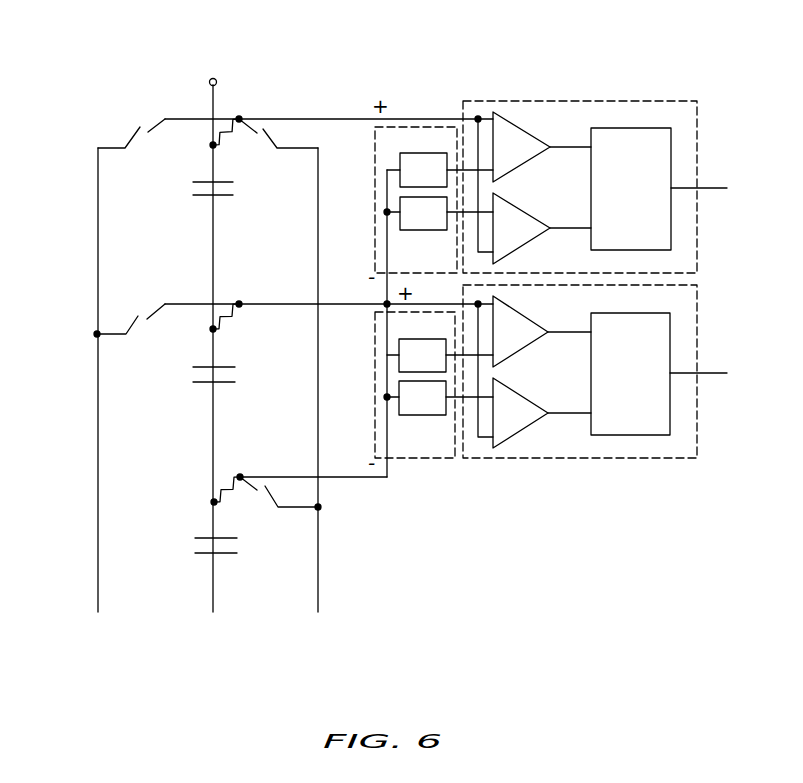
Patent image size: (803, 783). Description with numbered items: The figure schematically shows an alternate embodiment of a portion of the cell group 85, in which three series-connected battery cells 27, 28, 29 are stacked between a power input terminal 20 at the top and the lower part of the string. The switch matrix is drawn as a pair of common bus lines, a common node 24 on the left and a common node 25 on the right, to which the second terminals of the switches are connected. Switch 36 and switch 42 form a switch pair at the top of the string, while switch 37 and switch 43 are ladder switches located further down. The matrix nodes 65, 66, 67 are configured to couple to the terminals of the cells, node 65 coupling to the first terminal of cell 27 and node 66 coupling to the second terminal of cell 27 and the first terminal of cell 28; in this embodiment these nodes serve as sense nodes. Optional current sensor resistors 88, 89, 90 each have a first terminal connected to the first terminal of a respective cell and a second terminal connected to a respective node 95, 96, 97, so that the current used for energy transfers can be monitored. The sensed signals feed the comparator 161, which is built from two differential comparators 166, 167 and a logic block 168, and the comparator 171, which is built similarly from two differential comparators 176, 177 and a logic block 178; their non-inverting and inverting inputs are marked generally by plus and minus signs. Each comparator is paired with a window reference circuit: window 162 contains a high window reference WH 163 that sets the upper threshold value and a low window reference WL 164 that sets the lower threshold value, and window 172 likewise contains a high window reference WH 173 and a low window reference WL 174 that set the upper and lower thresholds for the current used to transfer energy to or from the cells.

The cell group 85 is at (128, 100).
The power input terminal 20 is at (211, 79).
The common node 24 is at (98, 265).
The common node 25 is at (318, 245).
The switch 36 is at (135, 138).
The ladder switch 37 is at (130, 325).
The switch 42 is at (279, 138).
The ladder switch 43 is at (272, 497).
The node 95 is at (241, 117).
The node 96 is at (239, 302).
The node 97 is at (240, 475).
The node 65 is at (211, 148).
The node 66 is at (211, 332).
The node 67 is at (212, 505).
The resistor 88 is at (228, 134).
The resistor 89 is at (228, 320).
The resistor 90 is at (228, 494).
The battery cell 27 is at (232, 191).
The battery cell 28 is at (230, 378).
The battery cell 29 is at (232, 549).
The comparator 161 is at (599, 174).
The window 162 is at (397, 200).
The high window reference 163 is at (428, 153).
The low window reference 164 is at (405, 231).
The differential comparator 166 is at (532, 130).
The differential comparator 167 is at (532, 208).
The logic block 168 is at (603, 128).
The comparator 171 is at (599, 385).
The window 172 is at (398, 385).
The high window reference 173 is at (428, 338).
The low window reference 174 is at (407, 417).
The differential comparator 176 is at (532, 315).
The differential comparator 177 is at (532, 393).
The logic block 178 is at (601, 313).